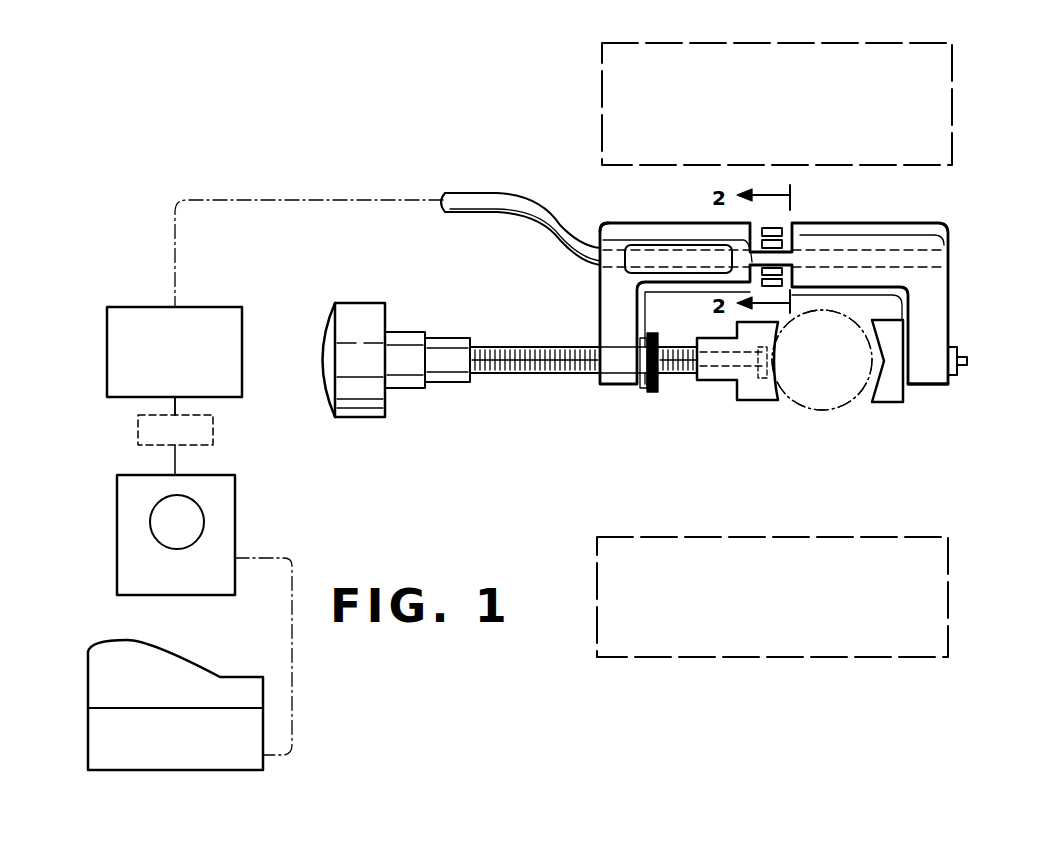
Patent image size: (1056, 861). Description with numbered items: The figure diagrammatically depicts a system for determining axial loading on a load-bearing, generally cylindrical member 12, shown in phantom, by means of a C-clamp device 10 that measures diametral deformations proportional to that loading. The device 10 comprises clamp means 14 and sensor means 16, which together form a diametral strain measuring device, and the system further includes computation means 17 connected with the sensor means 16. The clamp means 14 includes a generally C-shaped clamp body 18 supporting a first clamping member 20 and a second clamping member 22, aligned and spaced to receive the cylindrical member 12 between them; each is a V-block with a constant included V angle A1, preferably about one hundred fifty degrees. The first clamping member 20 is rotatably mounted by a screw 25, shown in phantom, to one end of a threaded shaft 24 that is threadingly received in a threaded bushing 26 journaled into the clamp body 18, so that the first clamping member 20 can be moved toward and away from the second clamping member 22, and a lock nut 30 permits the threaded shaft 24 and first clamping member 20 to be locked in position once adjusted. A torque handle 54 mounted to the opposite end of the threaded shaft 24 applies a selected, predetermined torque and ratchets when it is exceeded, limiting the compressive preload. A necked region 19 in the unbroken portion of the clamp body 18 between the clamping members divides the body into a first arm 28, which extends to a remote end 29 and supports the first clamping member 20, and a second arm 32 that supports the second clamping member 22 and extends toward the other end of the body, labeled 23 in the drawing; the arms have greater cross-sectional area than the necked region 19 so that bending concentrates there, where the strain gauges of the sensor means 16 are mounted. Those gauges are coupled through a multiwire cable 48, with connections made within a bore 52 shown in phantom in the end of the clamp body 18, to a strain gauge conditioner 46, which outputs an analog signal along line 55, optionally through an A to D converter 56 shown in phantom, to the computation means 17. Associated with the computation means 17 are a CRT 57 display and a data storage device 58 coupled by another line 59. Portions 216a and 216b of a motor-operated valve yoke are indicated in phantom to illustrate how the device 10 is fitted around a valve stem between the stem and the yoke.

The C-clamp device 10 is at (958, 226).
The cylindrical member 12 is at (825, 406).
The clamp means 14 is at (952, 283).
The sensor means 16 is at (793, 236).
The computation means 17 is at (236, 510).
The clamp body 18 is at (887, 242).
The necked region 19 is at (768, 260).
The first clamping member 20 is at (730, 381).
The second clamping member 22 is at (888, 401).
The frame bottom 23 is at (928, 386).
The threaded shaft 24 is at (530, 375).
The screw 25 is at (725, 350).
The threaded bushing 26 is at (640, 358).
The first arm 28 is at (627, 325).
The remote end 29 is at (627, 386).
The nut 30 is at (655, 391).
The second arm 32 is at (941, 367).
The strain gauge conditioner 46 is at (243, 322).
The multiwire cable 48 is at (462, 200).
The bore 52 is at (598, 237).
The torque handle 54 is at (680, 260).
The line 55 is at (170, 410).
The A to D converter 56 is at (215, 445).
The CRT 57 is at (160, 522).
The data storage device 58 is at (362, 418).
The line 59 is at (292, 628).
The included V angle A1 is at (786, 350).
The portion of MOV yoke 216a is at (940, 88).
The portion of MOV yoke 216b is at (933, 590).